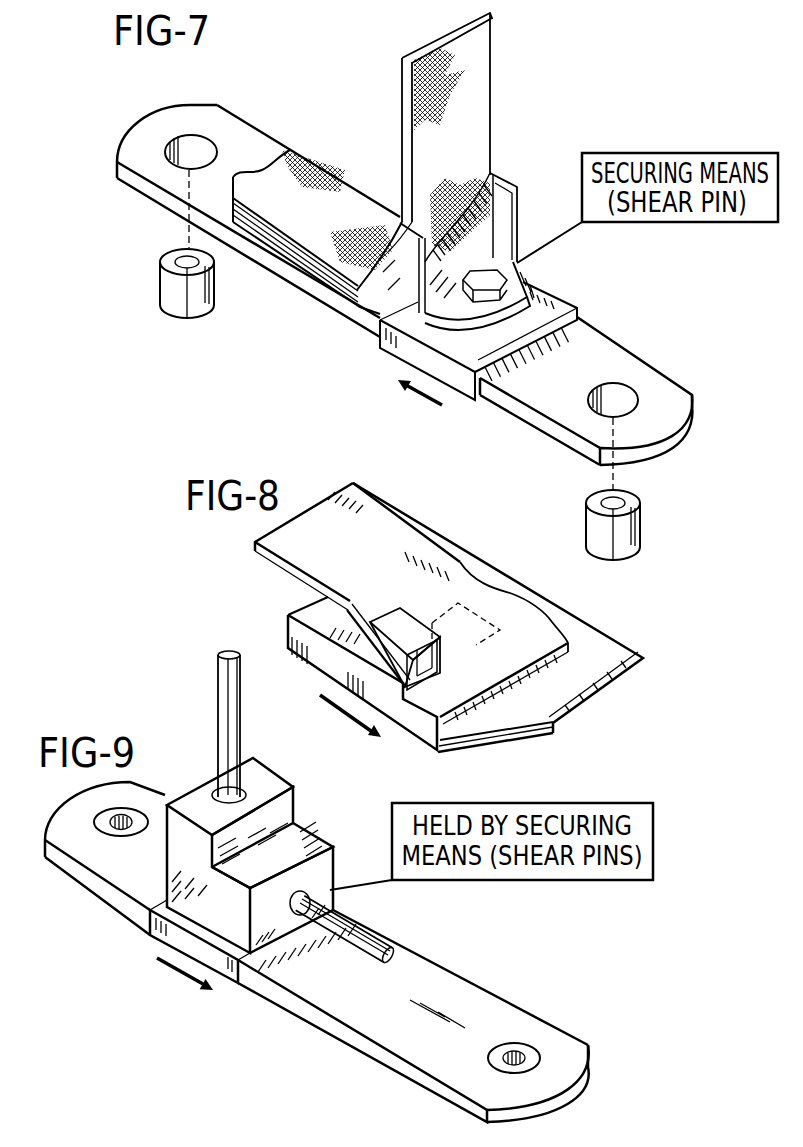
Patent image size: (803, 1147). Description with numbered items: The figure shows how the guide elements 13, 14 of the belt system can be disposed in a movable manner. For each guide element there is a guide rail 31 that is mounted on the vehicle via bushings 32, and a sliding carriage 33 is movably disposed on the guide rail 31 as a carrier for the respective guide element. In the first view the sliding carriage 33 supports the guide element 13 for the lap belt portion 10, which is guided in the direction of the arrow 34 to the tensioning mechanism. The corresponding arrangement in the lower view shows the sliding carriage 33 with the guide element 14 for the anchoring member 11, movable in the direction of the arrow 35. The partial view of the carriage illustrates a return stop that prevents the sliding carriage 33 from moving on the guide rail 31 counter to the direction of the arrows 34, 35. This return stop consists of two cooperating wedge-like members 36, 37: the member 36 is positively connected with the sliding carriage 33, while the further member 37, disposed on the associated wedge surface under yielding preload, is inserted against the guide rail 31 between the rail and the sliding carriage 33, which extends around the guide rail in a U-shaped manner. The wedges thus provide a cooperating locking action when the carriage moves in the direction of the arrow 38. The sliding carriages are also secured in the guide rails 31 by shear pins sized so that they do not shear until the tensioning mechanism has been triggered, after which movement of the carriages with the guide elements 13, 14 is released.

In FIG. 7, the lap belt portion 10 is at (402, 114).
In FIG. 9, the anchoring member 11 is at (227, 699).
In FIG. 7, the guide element 13 is at (505, 190).
In FIG. 9, the guide element 14 is at (198, 792).
In FIG. 7, the guide rail 31 is at (625, 363).
In FIG. 8, the guide rail 31 is at (600, 640).
In FIG. 9, the guide rail 31 is at (453, 982).
In FIG. 7, the bushings 32 is at (165, 283).
In FIG. 9, the bushings 32 is at (110, 835).
In FIG. 7, the sliding carriage 33 is at (560, 303).
In FIG. 8, the sliding carriage 33 is at (530, 627).
In FIG. 9, the sliding carriage 33 is at (200, 941).
In FIG. 7, the arrow 34 is at (400, 408).
In FIG. 9, the arrow 35 is at (178, 978).
In FIG. 8, the wedge-like member 36 is at (317, 614).
In FIG. 8, the wedge-like member 37 is at (405, 627).
In FIG. 8, the arrow 38 is at (343, 717).